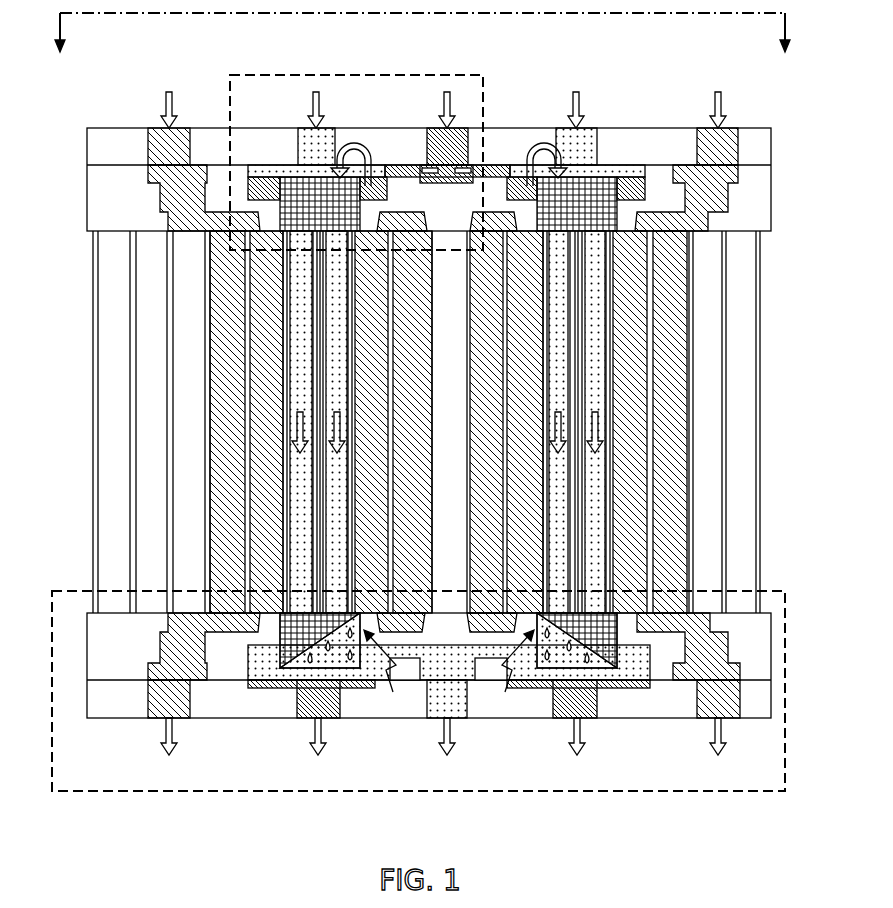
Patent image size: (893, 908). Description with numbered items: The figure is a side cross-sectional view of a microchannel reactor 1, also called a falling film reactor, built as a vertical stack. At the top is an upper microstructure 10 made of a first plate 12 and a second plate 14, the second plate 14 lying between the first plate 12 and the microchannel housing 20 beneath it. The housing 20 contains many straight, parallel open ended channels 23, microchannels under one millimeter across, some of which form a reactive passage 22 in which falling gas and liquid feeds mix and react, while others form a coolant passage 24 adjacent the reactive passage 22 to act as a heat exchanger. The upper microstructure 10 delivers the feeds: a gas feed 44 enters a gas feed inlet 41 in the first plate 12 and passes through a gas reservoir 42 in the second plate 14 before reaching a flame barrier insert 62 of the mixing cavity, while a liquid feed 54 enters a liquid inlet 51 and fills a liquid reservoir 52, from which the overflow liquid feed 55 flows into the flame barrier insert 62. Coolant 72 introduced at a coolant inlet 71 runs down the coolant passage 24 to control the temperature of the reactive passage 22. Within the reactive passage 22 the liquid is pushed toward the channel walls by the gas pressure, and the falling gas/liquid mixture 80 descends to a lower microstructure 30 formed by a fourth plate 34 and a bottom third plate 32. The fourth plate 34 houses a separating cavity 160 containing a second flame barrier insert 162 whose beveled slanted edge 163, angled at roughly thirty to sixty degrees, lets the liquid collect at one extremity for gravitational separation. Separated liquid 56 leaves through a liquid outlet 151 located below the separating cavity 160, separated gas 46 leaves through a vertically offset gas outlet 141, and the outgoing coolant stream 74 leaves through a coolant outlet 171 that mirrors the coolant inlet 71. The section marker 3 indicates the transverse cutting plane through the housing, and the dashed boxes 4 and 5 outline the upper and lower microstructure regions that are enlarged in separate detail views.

The microchannel reactor 1 is at (36, 720).
The section line 3 is at (422, 51).
The detail region 4 is at (258, 75).
The detail region 5 is at (612, 792).
The upper microstructure 10 is at (86, 128).
The first plate 12 is at (779, 145).
The second plate 14 is at (779, 203).
The microchannel housing 20 is at (79, 235).
The reactive passage 22 is at (330, 318).
The open ended channels 23 is at (178, 320).
The coolant passage 24 is at (218, 438).
The lower microstructure 30 is at (86, 613).
The third plate 32 is at (779, 697).
The fourth plate 34 is at (779, 638).
The gas feed inlet 41 is at (303, 128).
The gas reservoir 42 is at (268, 163).
The gas feed 44 is at (314, 90).
The separated gas 46 is at (440, 752).
The liquid inlet 51 is at (434, 128).
The liquid reservoir 52 is at (372, 180).
The liquid feed 54 is at (445, 90).
The overflow liquid feed 55 is at (352, 146).
The separated liquid 56 is at (312, 752).
The flame barrier insert 62 is at (320, 177).
The coolant inlet 71 is at (708, 128).
The coolant 72 is at (168, 90).
The coolant outlet flow 74 is at (162, 752).
The gas/liquid mixture 80 is at (500, 378).
The gas outlet 141 is at (428, 712).
The liquid outlet 151 is at (298, 712).
The separating cavity 160 is at (449, 673).
The flame barrier insert 162 is at (278, 640).
The slanted edge 163 is at (317, 642).
The coolant outlet 171 is at (155, 708).